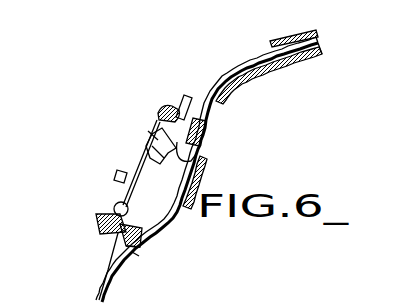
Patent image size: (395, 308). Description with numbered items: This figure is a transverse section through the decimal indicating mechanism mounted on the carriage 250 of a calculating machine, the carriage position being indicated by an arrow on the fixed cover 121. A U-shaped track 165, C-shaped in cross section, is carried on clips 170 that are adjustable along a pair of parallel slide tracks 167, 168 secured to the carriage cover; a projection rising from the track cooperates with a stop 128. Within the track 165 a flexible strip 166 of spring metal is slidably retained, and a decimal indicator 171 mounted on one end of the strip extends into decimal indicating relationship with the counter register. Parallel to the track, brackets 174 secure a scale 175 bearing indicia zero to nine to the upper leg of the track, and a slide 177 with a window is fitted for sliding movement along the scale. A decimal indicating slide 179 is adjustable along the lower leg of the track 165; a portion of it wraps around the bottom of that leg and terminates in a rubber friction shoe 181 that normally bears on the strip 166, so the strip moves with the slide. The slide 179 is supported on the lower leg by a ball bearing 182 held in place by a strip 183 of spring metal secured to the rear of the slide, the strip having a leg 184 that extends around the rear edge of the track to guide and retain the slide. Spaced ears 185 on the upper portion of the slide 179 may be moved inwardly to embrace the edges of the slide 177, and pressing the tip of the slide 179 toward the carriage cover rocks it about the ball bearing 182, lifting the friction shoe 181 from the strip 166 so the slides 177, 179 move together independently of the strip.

The cover 121 is at (272, 42).
The stop 128 is at (319, 42).
The carriage 250 is at (240, 68).
The U-shaped track 165 is at (158, 117).
The flexible strip 166 is at (169, 107).
The slide track 167 is at (207, 131).
The slide track 168 is at (140, 241).
The clip 170 is at (197, 156).
The decimal indicator 171 is at (187, 95).
The bracket 174 is at (197, 168).
The scale 175 is at (147, 137).
The slide 177 is at (148, 152).
The decimal indicating slide 179 is at (98, 218).
The friction shoe 181 is at (107, 238).
The ball bearing 182 is at (113, 203).
The strip of spring metal 183 is at (118, 186).
The leg 184 is at (142, 231).
The ears 185 is at (123, 172).